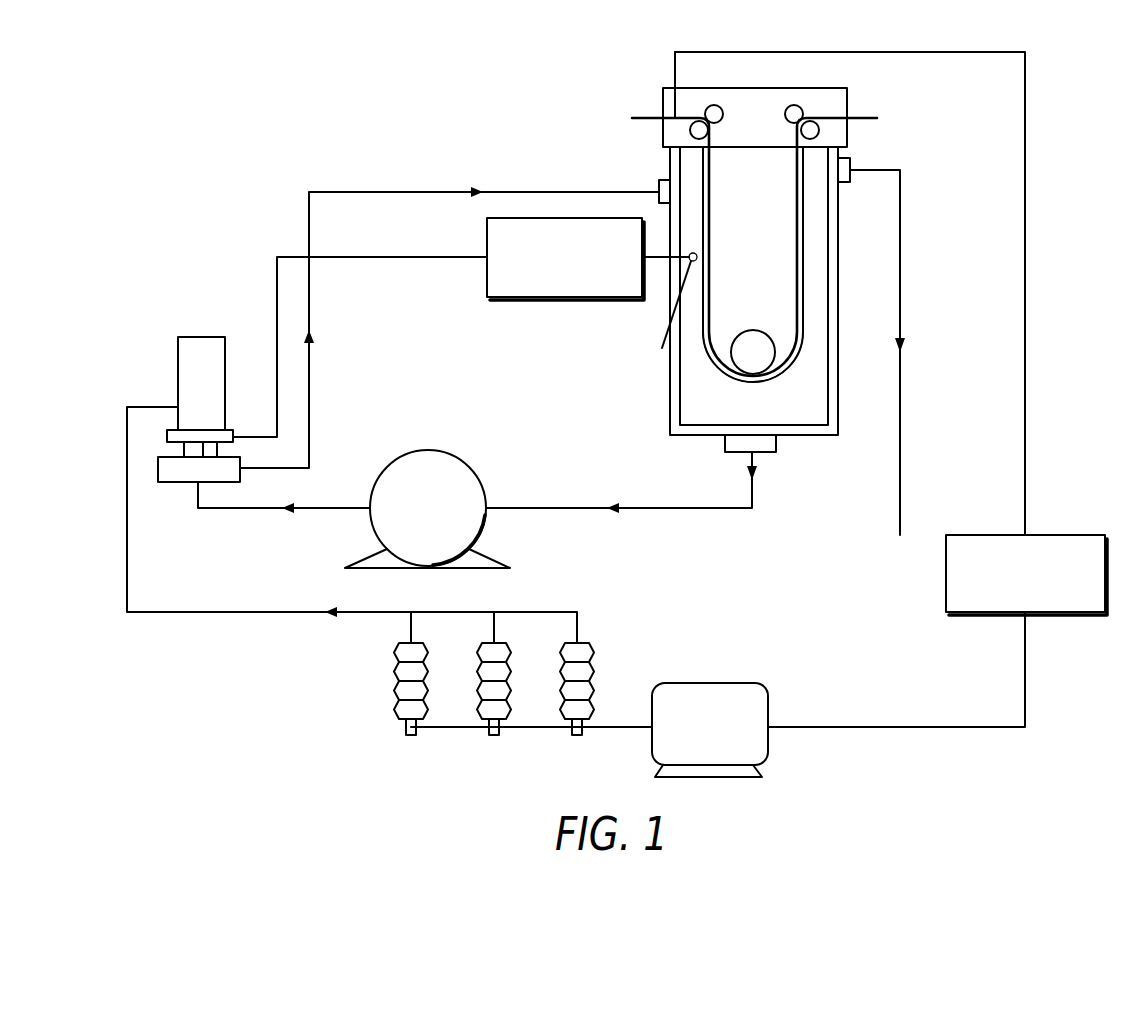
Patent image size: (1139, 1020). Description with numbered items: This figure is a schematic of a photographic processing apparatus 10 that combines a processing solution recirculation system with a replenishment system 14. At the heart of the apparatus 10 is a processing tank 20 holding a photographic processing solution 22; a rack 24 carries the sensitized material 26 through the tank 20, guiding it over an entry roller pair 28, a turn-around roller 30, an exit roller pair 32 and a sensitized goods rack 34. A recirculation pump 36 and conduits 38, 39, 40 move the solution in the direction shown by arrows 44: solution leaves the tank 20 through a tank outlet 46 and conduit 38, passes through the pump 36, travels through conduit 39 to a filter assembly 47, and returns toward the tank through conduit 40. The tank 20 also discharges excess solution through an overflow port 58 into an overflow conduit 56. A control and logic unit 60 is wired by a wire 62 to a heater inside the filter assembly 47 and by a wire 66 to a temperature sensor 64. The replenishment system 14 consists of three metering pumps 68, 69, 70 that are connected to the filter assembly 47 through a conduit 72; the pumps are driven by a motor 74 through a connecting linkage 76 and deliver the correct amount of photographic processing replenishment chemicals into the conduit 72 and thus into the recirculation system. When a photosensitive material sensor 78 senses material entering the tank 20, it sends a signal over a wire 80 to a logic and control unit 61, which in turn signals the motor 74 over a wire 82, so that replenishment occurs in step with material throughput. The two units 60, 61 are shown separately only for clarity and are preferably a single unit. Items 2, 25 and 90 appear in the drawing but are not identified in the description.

The apparatus 2 is at (600, 548).
The photographic processing apparatus 10 is at (164, 633).
The replenishment system 14 is at (384, 703).
The processing tank 20 is at (800, 433).
The photographic processing solution 22 is at (735, 157).
The rack 24 is at (785, 88).
The inlet 25 is at (658, 200).
The sensitized material 26 is at (643, 118).
The entry roller pair 28 is at (715, 105).
The turn-around roller 30 is at (702, 347).
The exit roller pair 32 is at (803, 105).
The sensitized goods rack 34 is at (730, 353).
The recirculation pump 36 is at (467, 460).
The conduit 38 is at (708, 510).
The conduit 39 is at (327, 507).
The conduit 40 is at (392, 190).
The arrows 44 is at (480, 187).
The tank outlet 46 is at (725, 452).
The filter assembly 47 is at (178, 338).
The overflow conduit 56 is at (901, 231).
The overflow port 58 is at (844, 183).
The control and logic unit 60 is at (512, 298).
The logic and control unit 61 is at (1051, 534).
The wire 62 is at (405, 258).
The temperature sensor 64 is at (663, 345).
The wire 66 is at (657, 262).
The metering pump 68 is at (397, 648).
The metering pump 69 is at (480, 647).
The metering pump 70 is at (563, 647).
The conduit 72 is at (233, 613).
The motor 74 is at (762, 685).
The connecting linkage 76 is at (632, 727).
The photosensitive material sensor 78 is at (675, 116).
The wire 80 is at (1027, 394).
The wire 82 is at (1023, 672).
The valve body 90 is at (170, 482).